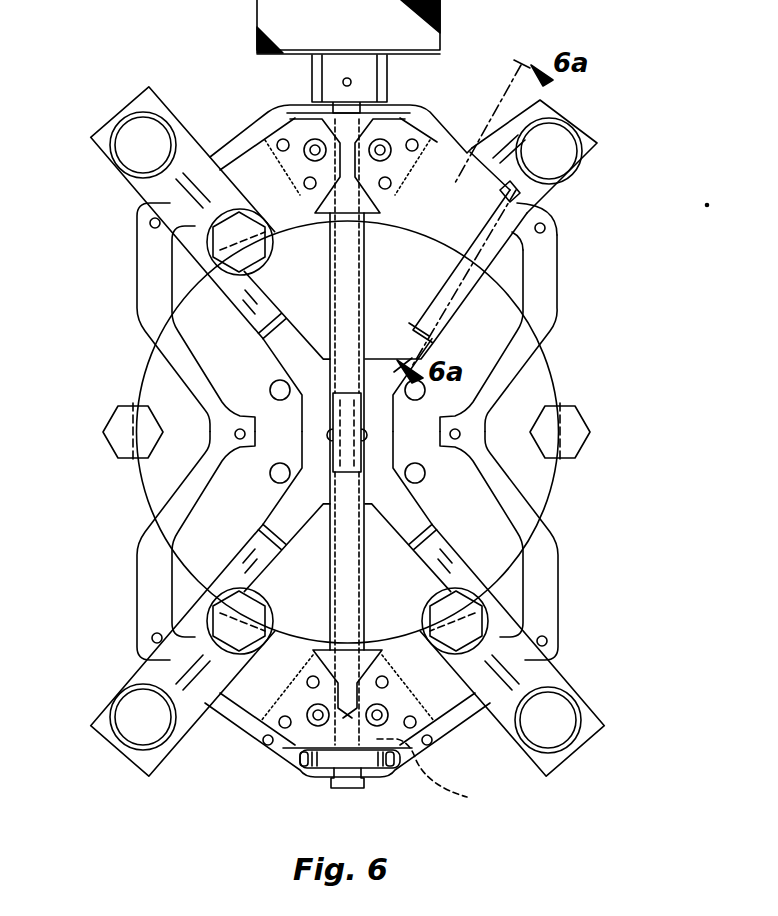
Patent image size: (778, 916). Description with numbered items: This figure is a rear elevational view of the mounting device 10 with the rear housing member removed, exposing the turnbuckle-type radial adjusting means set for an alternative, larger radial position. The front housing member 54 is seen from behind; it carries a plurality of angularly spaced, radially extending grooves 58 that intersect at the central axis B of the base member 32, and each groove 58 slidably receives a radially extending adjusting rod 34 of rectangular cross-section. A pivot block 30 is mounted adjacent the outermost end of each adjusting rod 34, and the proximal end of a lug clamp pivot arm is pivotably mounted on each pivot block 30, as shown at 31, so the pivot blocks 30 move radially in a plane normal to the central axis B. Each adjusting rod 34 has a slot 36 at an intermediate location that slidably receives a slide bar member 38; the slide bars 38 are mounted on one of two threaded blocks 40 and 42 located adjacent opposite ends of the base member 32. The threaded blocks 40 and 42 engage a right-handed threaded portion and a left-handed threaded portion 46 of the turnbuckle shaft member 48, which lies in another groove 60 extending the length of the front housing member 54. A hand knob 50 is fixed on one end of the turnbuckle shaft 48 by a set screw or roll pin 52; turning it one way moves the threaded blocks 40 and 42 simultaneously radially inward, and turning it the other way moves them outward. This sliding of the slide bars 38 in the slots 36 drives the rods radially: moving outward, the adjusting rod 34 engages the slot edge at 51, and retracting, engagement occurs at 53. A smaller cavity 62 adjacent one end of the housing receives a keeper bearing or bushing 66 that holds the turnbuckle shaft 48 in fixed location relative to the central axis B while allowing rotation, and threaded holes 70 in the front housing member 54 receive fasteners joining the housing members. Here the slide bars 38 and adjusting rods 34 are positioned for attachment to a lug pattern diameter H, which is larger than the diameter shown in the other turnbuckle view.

The mounting device 10 is at (507, 782).
The pivot block 30 is at (100, 152).
The pivot mounting 31 is at (143, 115).
The base member 32 is at (413, 770).
The adjusting rod 34 is at (222, 290).
The slot 36 is at (535, 230).
The slide bar member 38 is at (450, 305).
The threaded block 40 is at (418, 118).
The threaded block 42 is at (310, 768).
The left handed threaded portion 46 is at (434, 774).
The turnbuckle shaft member 48 is at (350, 790).
The hand knob 50 is at (442, 24).
The slot edge engagement location 51 is at (507, 200).
The set screw or roll pin 52 is at (342, 83).
The slot edge engagement location 53 is at (455, 262).
The front housing member 54 is at (560, 560).
The groove 58 is at (282, 342).
The groove 60 is at (366, 325).
The cavity 62 is at (302, 760).
The keeper bearing or bushing 66 is at (386, 768).
The hole 70 is at (150, 223).
The central axis B is at (333, 436).
The lug pattern diameter H is at (553, 488).